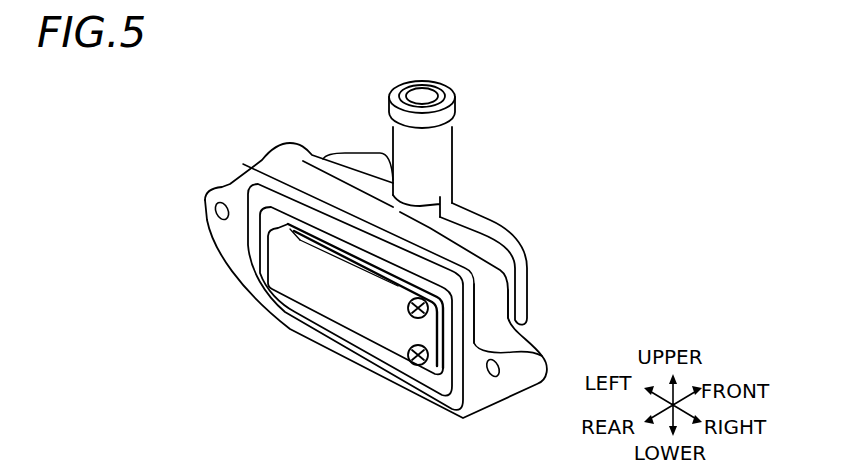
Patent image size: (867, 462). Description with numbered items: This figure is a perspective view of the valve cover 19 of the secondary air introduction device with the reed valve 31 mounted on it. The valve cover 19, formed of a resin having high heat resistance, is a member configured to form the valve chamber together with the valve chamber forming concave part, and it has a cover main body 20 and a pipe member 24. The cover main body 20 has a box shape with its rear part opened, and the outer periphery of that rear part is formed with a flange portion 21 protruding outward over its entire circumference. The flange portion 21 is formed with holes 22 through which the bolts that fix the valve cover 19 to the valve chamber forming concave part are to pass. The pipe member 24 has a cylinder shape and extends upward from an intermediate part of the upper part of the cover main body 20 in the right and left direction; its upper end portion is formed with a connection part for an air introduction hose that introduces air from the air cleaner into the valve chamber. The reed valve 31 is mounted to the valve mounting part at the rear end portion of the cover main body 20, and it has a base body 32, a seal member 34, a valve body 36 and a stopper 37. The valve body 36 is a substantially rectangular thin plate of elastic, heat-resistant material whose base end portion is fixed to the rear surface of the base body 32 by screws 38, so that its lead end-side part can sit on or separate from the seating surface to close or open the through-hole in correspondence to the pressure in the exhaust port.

The valve cover 19 is at (482, 192).
The cover main body 20 is at (513, 231).
The flange portion 21 is at (500, 297).
The holes 22 is at (214, 212).
The pipe member 24 is at (443, 142).
The reed valve 31 is at (348, 349).
The base body 32 is at (246, 242).
The seal member 34 is at (289, 228).
The valve body 36 is at (296, 228).
The stopper 37 is at (310, 290).
The screws 38 is at (408, 318).